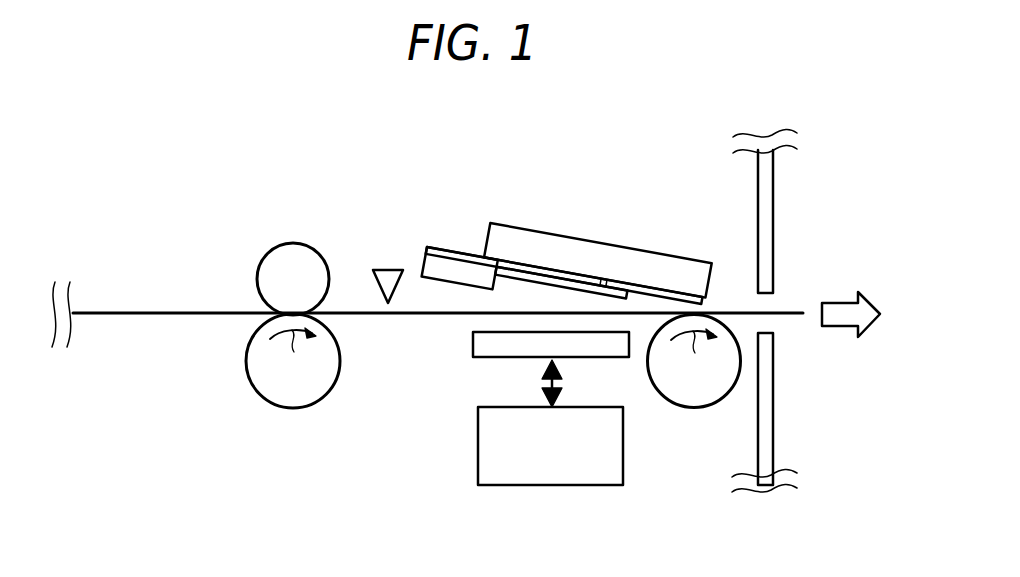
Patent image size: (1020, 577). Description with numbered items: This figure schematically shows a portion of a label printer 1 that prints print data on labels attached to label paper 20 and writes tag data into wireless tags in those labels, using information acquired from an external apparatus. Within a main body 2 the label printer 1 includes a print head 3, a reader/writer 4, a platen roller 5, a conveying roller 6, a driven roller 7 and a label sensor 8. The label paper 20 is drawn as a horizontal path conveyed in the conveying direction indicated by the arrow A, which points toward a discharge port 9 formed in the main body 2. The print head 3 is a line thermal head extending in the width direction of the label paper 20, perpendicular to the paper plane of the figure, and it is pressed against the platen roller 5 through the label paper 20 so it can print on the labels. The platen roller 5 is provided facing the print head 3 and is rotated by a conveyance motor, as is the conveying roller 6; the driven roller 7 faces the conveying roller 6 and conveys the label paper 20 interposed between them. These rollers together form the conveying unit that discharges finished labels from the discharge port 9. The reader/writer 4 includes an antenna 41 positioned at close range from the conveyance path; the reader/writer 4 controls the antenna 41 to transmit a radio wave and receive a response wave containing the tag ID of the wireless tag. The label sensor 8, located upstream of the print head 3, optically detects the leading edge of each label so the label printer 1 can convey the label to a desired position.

The label printer 1 is at (584, 162).
The label paper 20 is at (124, 312).
The driven roller 7 is at (293, 243).
The conveying roller 6 is at (294, 408).
The label sensor 8 is at (389, 268).
The print head 3 is at (627, 246).
The antenna 41 is at (485, 358).
The reader/writer 4 is at (553, 486).
The platen roller 5 is at (694, 408).
The main body 2 is at (773, 218).
The discharge port 9 is at (772, 303).
The arrow indicating conveying direction A is at (868, 302).